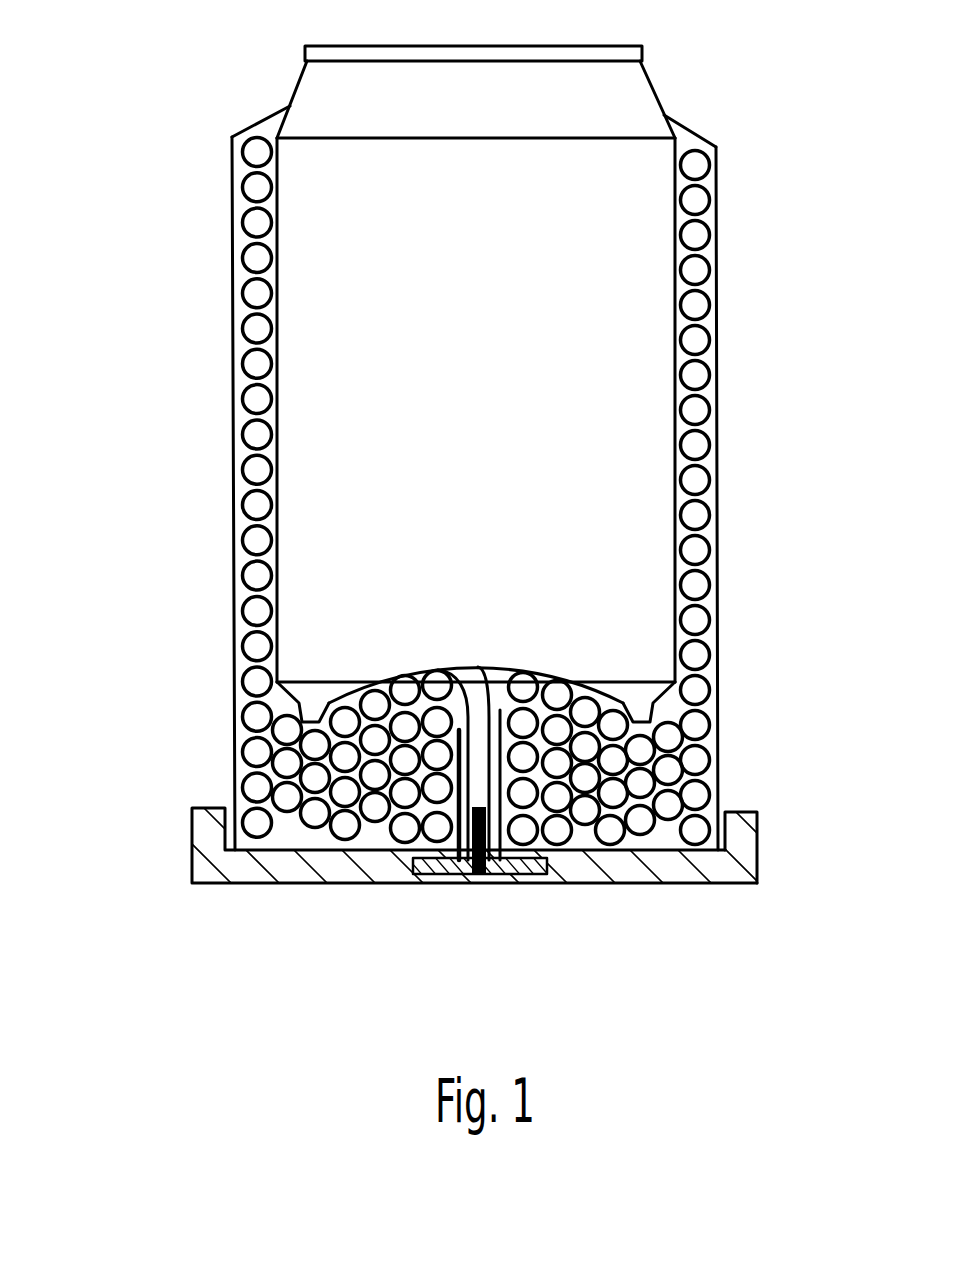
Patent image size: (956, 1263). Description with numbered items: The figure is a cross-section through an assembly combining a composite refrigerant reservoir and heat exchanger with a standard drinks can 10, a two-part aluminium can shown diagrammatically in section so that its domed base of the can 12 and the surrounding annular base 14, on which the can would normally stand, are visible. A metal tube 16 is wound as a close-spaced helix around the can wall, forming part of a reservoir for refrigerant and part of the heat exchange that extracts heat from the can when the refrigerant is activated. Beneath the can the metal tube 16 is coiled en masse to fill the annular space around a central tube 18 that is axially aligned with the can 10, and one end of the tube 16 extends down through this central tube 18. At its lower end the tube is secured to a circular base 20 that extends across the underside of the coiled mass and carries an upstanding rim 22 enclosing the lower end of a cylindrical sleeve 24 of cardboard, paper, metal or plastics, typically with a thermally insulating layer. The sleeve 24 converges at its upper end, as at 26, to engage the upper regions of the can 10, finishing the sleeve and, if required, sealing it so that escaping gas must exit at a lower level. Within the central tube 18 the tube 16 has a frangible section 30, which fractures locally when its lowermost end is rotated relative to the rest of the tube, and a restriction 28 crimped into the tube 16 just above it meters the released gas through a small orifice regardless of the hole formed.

The drinks can 10 is at (318, 246).
The domed base of the can 12 is at (483, 665).
The annular base 14 is at (657, 710).
The metal tube 16 is at (247, 340).
The central tube 18 is at (523, 687).
The circular base 20 is at (313, 877).
The upstanding rim 22 is at (758, 830).
The cylindrical sleeve 24 is at (718, 340).
The converging upper end of the sleeve 26 is at (687, 120).
The restriction 28 is at (505, 866).
The frangible section 30 is at (465, 866).